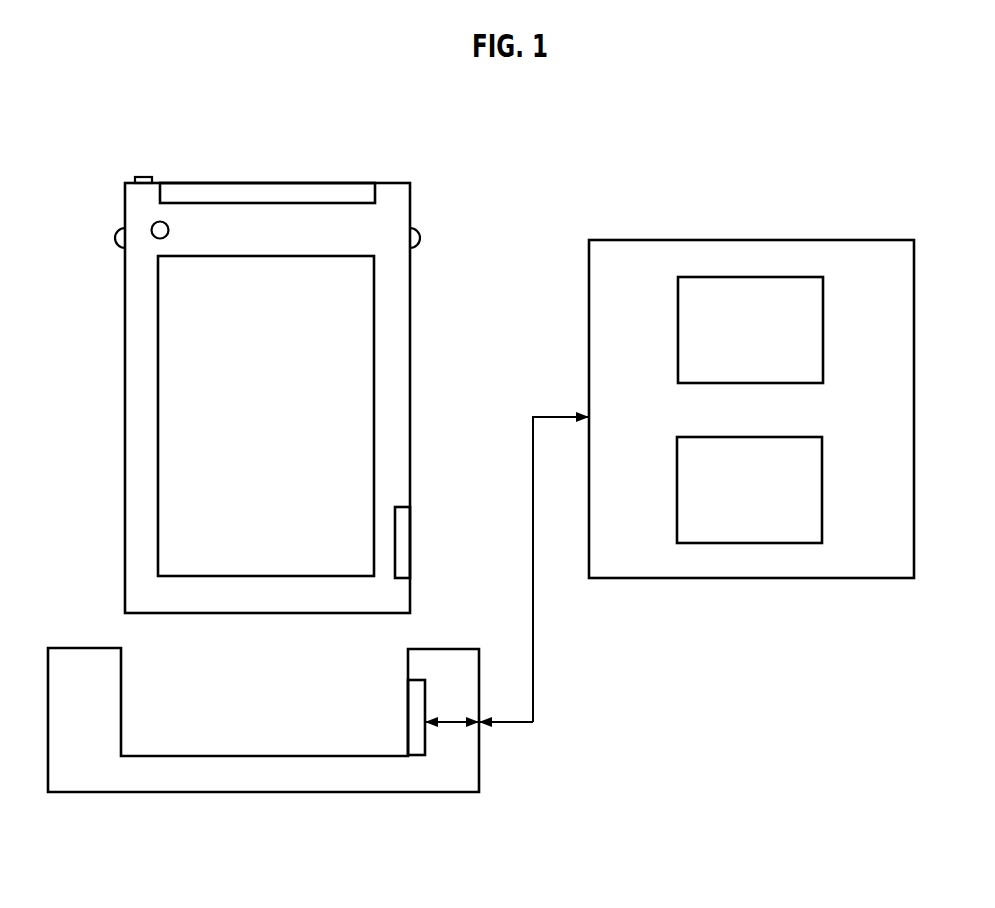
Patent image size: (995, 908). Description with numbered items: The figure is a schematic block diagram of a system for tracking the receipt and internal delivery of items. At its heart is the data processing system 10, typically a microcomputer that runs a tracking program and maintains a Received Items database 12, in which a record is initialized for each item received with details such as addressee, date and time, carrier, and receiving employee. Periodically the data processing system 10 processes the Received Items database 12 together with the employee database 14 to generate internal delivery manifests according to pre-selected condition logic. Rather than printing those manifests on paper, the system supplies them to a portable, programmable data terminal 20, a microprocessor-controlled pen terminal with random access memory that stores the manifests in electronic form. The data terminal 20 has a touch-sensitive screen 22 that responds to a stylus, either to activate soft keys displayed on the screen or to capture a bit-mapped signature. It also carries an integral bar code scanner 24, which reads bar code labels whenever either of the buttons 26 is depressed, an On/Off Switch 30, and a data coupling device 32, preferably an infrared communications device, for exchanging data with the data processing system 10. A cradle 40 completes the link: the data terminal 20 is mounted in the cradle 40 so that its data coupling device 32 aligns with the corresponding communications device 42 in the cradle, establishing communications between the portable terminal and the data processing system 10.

The data processing system 10 is at (703, 240).
The Received Items database 12 is at (773, 277).
The employee database 14 is at (749, 543).
The portable programmable data terminal 20 is at (440, 308).
The touch-sensitive screen 22 is at (374, 437).
The integral bar code scanner 24 is at (310, 188).
The buttons 26 is at (117, 238).
The On/Off Switch 30 is at (142, 177).
The data coupling device 32 is at (400, 542).
The cradle 40 is at (445, 649).
The communications device 42 is at (425, 737).